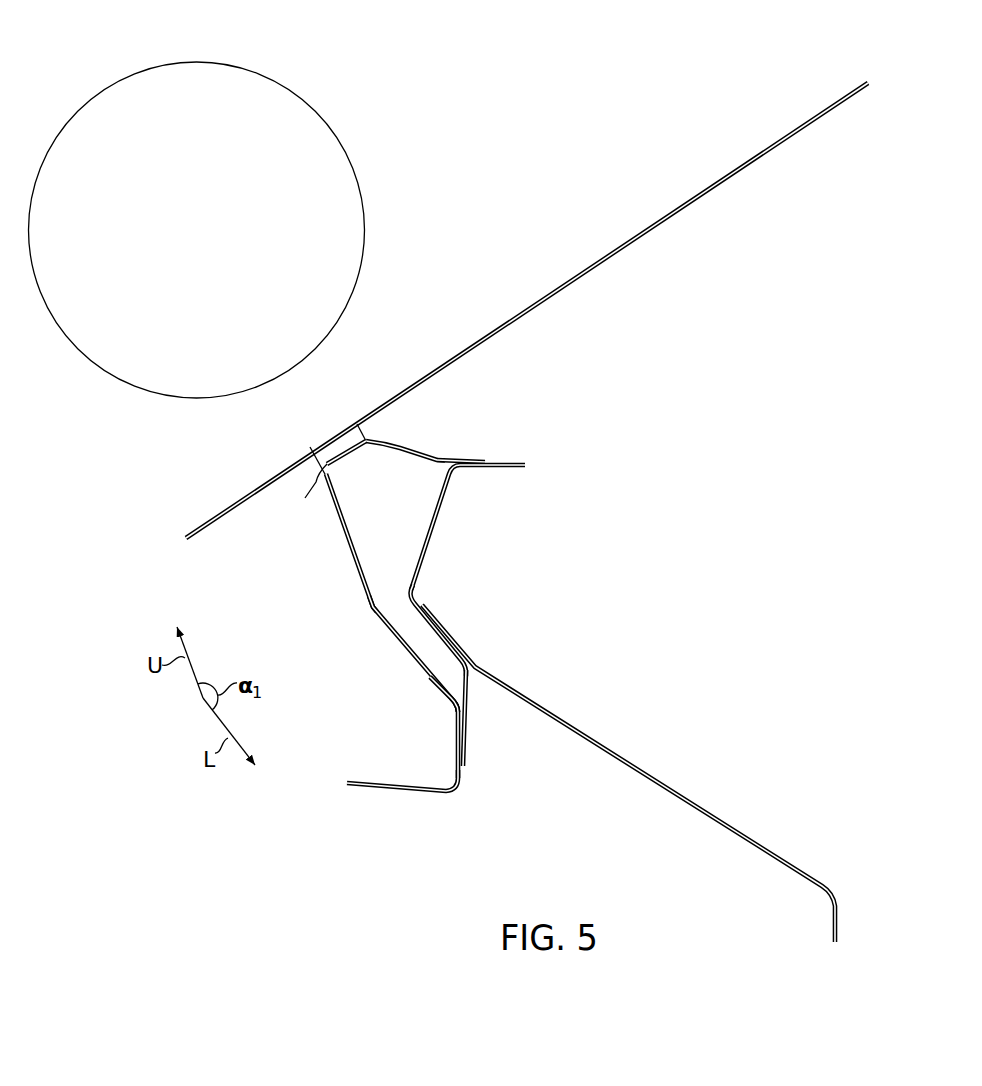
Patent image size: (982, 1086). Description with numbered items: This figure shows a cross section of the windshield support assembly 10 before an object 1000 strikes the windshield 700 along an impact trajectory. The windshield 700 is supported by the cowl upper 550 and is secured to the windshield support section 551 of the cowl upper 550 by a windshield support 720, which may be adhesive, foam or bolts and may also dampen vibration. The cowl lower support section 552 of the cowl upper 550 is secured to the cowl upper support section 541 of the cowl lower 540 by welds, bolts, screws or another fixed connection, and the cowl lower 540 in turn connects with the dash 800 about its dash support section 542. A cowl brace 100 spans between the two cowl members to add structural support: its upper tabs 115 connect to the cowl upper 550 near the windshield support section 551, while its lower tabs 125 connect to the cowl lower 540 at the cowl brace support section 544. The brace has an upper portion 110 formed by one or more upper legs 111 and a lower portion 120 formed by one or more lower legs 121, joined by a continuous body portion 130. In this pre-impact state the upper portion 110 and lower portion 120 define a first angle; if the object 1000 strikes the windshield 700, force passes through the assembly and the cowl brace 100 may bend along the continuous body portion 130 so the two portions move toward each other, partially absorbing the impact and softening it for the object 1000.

The windshield support assembly 10 is at (410, 144).
The cowl brace 100 is at (327, 632).
The upper portion 110 is at (329, 543).
The upper legs 111 is at (355, 532).
The upper tabs 115 is at (349, 463).
The lower portion 120 is at (382, 733).
The lower legs 121 is at (433, 683).
The lower tabs 125 is at (457, 738).
The continuous body portion 130 is at (364, 654).
The cowl lower 540 is at (447, 615).
The cowl upper support section 541 is at (486, 469).
The dash support section 542 is at (432, 627).
The cowl brace support section 544 is at (468, 712).
The cowl upper 550 is at (430, 413).
The windshield support section 551 is at (345, 457).
The cowl lower support section 552 is at (464, 459).
The windshield 700 is at (542, 298).
The windshield support 720 is at (363, 423).
The dash 800 is at (622, 757).
The object 1000 is at (182, 62).